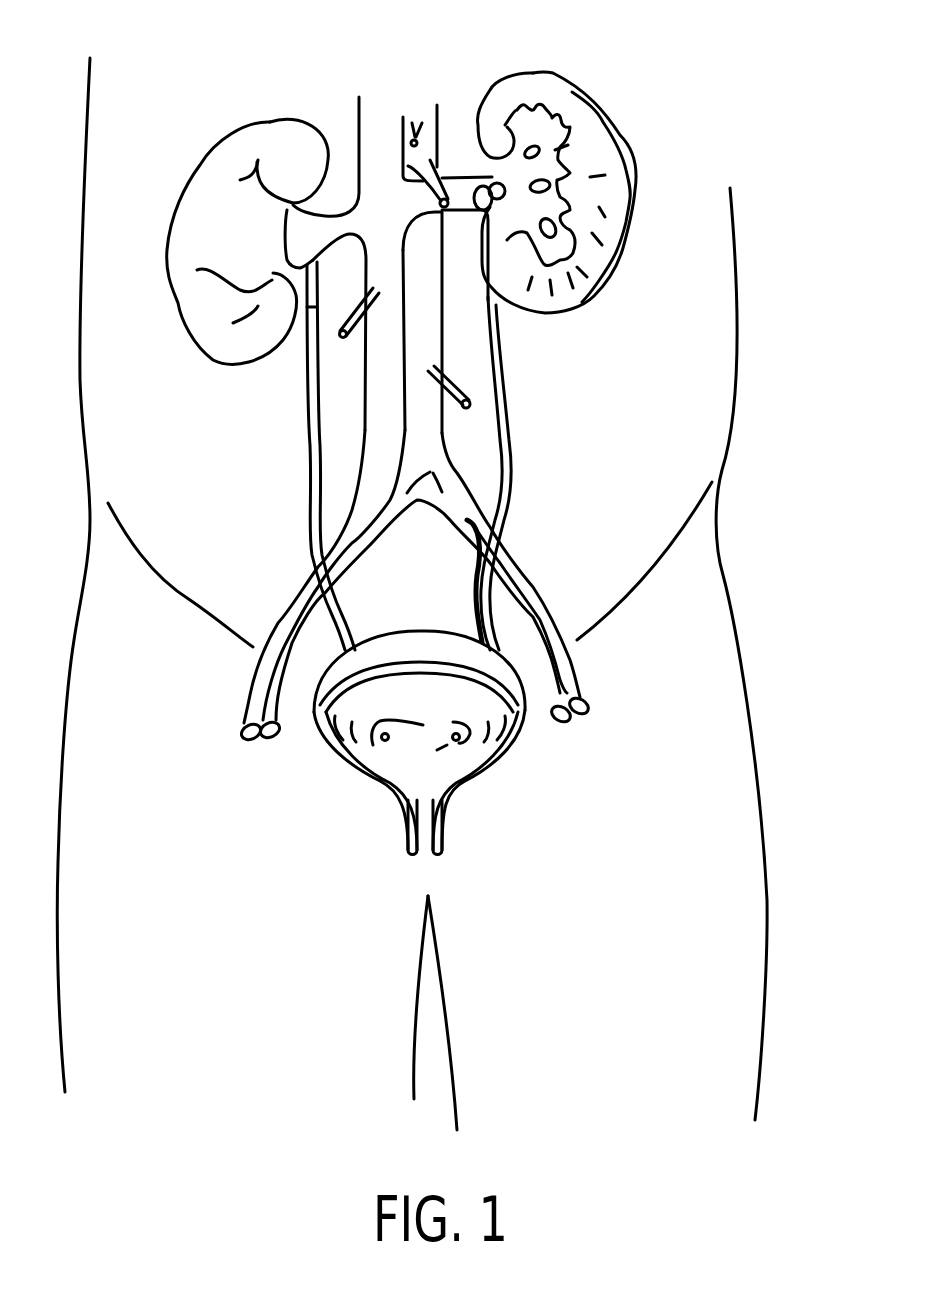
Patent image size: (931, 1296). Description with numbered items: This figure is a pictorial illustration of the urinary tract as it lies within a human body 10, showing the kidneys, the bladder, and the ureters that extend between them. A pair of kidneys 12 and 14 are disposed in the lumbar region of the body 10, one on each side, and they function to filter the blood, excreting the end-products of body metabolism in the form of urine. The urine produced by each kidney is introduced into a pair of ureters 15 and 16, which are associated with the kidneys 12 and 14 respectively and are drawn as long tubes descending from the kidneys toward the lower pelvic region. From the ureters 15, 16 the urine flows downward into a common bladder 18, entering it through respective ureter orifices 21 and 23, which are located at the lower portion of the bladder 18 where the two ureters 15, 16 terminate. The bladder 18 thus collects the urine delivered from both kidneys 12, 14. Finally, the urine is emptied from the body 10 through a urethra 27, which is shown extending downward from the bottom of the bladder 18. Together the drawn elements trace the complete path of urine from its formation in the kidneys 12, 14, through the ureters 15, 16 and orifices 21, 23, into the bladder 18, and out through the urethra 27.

The human body 10 is at (671, 395).
The kidney 12 is at (227, 193).
The kidney 14 is at (567, 113).
The ureter 15 is at (317, 446).
The ureter 16 is at (493, 382).
The bladder 18 is at (483, 660).
The ureter orifice 21 is at (380, 750).
The ureter orifice 23 is at (461, 748).
The urethra 27 is at (403, 833).